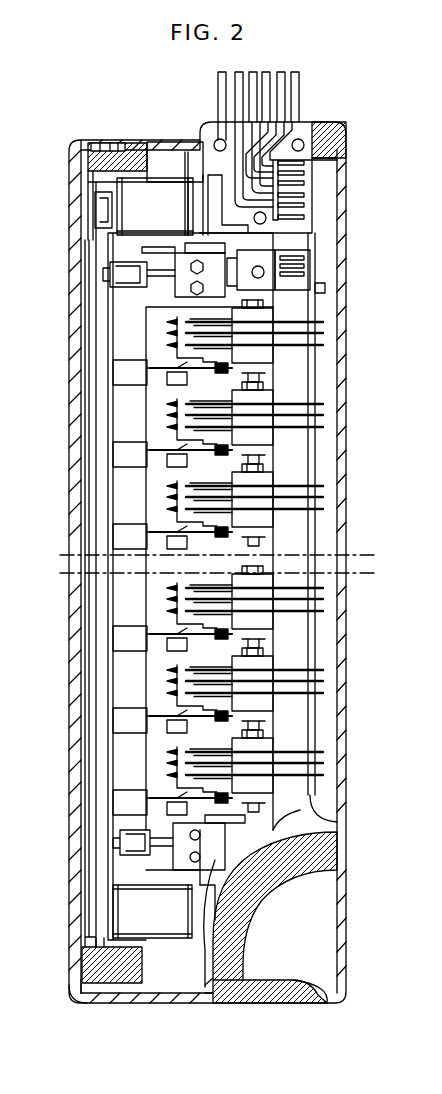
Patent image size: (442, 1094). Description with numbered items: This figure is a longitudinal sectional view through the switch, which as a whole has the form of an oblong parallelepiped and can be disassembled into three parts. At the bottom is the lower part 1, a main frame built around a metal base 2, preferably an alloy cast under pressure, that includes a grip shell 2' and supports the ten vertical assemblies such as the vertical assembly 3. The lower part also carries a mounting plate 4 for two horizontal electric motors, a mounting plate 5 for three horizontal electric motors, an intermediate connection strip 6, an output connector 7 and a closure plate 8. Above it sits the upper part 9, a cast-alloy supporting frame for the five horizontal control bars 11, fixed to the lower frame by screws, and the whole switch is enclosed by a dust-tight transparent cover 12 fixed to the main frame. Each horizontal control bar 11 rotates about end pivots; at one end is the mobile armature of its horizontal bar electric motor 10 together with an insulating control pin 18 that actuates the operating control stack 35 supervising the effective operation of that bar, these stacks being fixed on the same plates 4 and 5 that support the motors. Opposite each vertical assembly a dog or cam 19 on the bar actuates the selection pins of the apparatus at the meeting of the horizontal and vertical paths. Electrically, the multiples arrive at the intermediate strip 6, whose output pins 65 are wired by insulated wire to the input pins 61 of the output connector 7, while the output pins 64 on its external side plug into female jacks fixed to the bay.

The lower part 1 is at (212, 898).
The metal base 2 is at (228, 1017).
The grip shell 2' is at (307, 1017).
The vertical assembly 3 is at (176, 690).
The mounting plate 4 is at (204, 984).
The mounting plate 5 is at (207, 176).
The intermediate connection strip 6 is at (268, 283).
The output connector 7 is at (307, 127).
The closure plate 8 is at (340, 474).
The upper part 9 is at (138, 145).
The horizontal bar electric motor 10 is at (122, 910).
The horizontal control bar 11 is at (100, 488).
The transparent cover 12 is at (78, 1000).
The insulating control pin 18 is at (127, 266).
The dog or cam 19 is at (118, 375).
The control stack 35 is at (178, 833).
The input pins of the output connector 61 is at (346, 178).
The output pins 64 is at (264, 78).
The output pins of the intermediate strip 65 is at (310, 256).